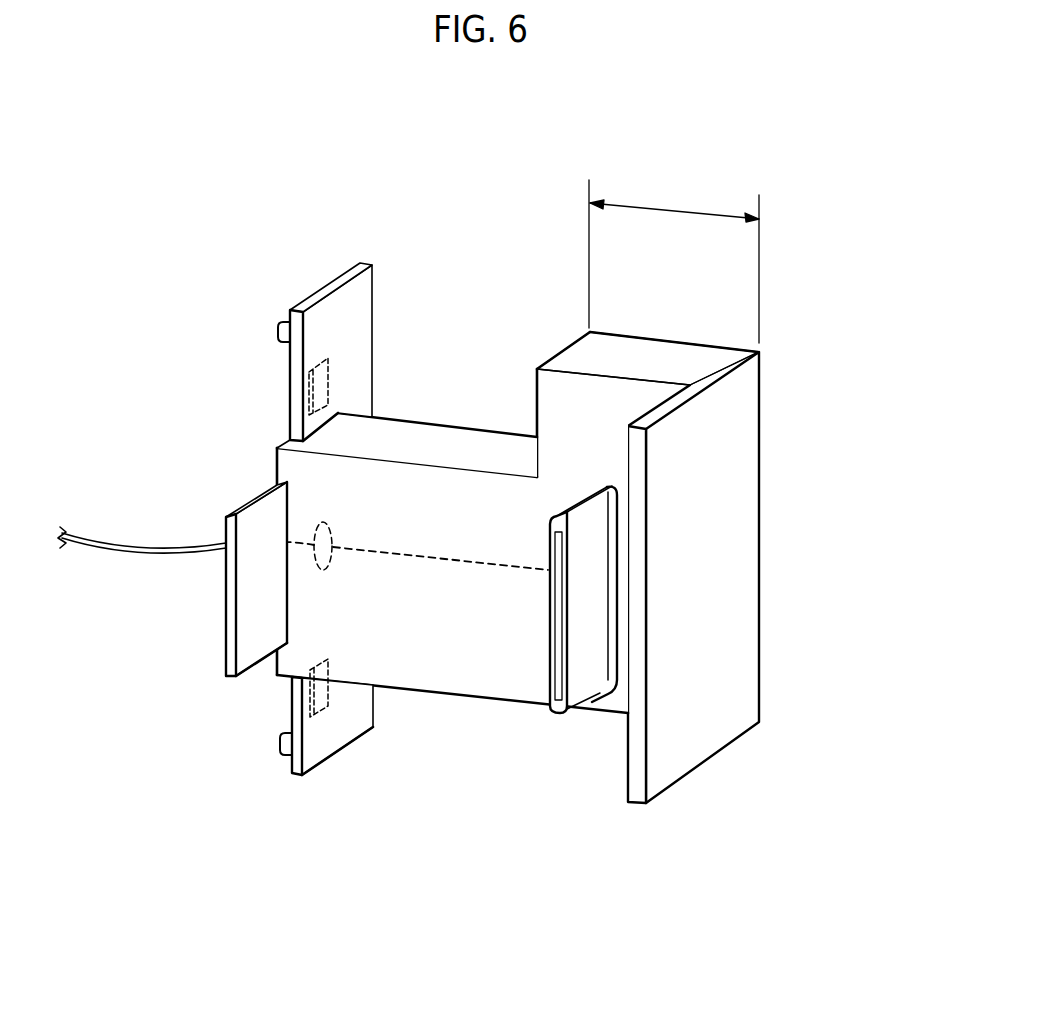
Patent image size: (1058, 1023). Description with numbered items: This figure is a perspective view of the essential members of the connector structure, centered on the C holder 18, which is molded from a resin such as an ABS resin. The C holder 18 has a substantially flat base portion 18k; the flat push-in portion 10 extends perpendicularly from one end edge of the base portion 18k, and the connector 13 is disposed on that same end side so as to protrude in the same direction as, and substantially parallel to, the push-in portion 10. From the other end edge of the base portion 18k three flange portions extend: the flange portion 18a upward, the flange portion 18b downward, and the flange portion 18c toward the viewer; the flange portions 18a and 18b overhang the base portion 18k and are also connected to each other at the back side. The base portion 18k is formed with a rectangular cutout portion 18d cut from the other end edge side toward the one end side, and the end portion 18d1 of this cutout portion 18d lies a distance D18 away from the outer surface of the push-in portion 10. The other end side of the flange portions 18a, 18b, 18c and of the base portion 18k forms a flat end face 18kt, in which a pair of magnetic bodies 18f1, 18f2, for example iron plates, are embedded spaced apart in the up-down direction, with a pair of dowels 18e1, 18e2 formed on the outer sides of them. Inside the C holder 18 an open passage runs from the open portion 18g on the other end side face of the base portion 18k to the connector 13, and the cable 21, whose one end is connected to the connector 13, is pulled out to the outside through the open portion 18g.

The push-in portion 10 is at (727, 558).
The C holder 18 is at (761, 388).
The base portion 18k is at (470, 684).
The end face 18kt is at (277, 459).
The cutout portion 18d is at (449, 440).
The end portion 18d1 is at (533, 407).
The flange portion 18a is at (325, 286).
The flange portion 18b is at (327, 760).
The flange portion 18c is at (226, 613).
The dowel 18e1 is at (282, 333).
The dowel 18e2 is at (289, 757).
The magnetic body 18f1 is at (309, 387).
The magnetic body 18f2 is at (302, 700).
The open portion 18g is at (320, 570).
The connector 13 is at (583, 690).
The cable 21 is at (137, 553).
The distance D18 is at (674, 261).